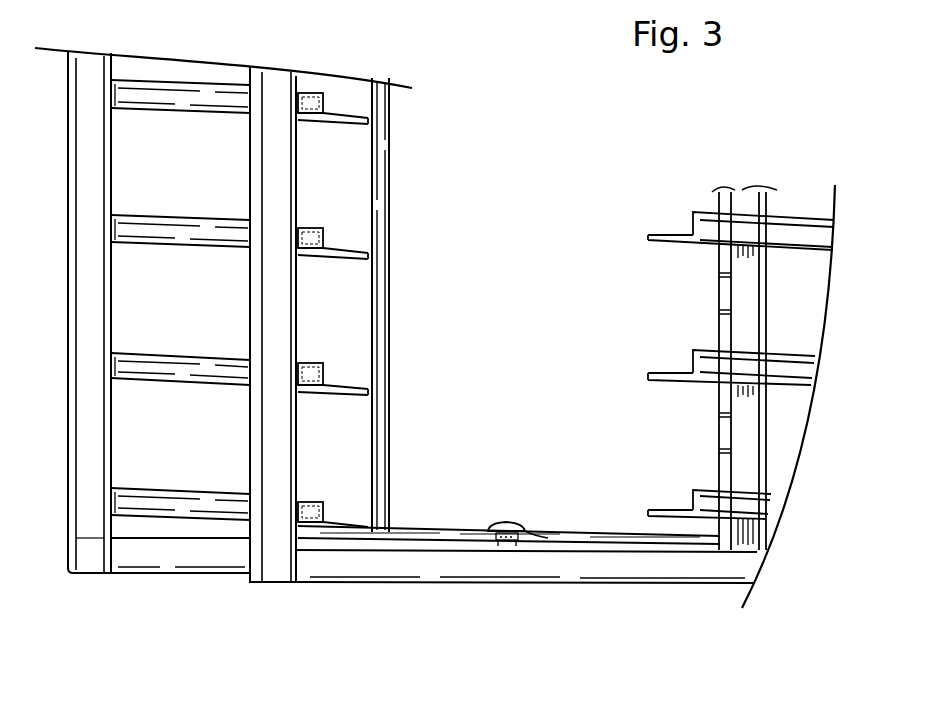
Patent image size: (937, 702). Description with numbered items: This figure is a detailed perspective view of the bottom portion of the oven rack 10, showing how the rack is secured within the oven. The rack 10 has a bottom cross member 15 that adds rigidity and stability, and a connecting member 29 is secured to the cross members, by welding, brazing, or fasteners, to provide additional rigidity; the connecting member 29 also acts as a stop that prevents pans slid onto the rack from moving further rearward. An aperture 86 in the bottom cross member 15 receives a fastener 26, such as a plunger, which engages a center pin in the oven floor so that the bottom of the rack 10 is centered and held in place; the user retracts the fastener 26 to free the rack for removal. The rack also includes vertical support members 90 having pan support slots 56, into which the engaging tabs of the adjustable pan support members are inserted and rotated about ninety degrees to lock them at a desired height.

The rack 10 is at (272, 583).
The bottom cross member 15 is at (448, 528).
The fastener 26 is at (502, 522).
The connecting member 29 is at (389, 188).
The pan support slot 56 is at (717, 452).
The aperture 86 is at (542, 538).
The vertical support member 90 is at (88, 535).